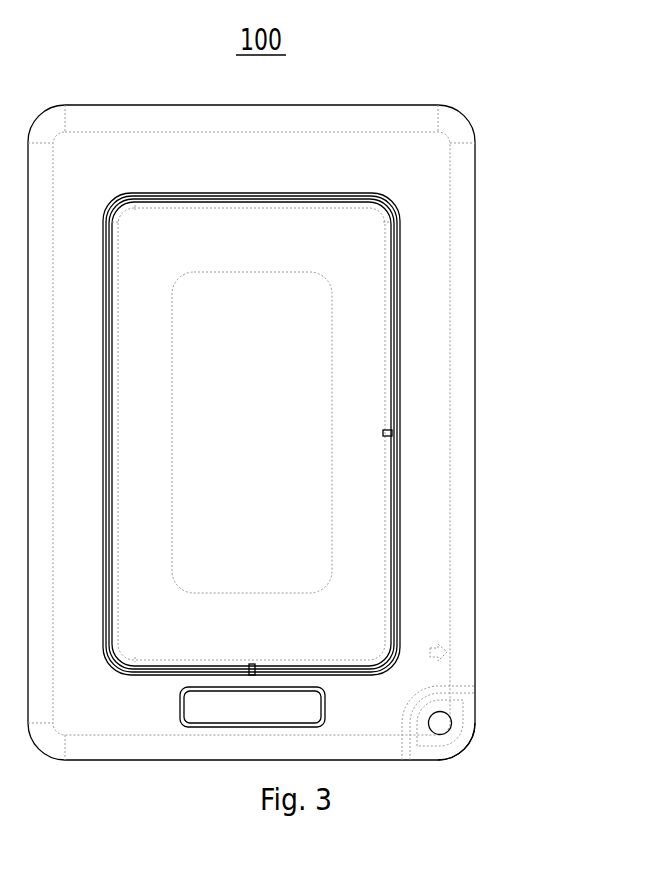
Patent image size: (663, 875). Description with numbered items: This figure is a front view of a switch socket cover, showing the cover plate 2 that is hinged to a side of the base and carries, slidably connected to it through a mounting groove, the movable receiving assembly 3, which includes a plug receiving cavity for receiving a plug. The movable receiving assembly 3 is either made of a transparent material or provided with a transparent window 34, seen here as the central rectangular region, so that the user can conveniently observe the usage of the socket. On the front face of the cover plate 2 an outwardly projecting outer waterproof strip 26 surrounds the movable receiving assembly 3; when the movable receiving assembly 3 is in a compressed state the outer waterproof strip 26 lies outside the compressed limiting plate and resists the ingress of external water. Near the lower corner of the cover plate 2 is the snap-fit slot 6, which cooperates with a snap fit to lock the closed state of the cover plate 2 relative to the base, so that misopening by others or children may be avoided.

The cover plate 2 is at (435, 312).
The movable receiving assembly 3 is at (372, 372).
The outer waterproof strip 26 is at (402, 533).
The transparent window 34 is at (302, 453).
The snap-fit slot 6 is at (440, 723).